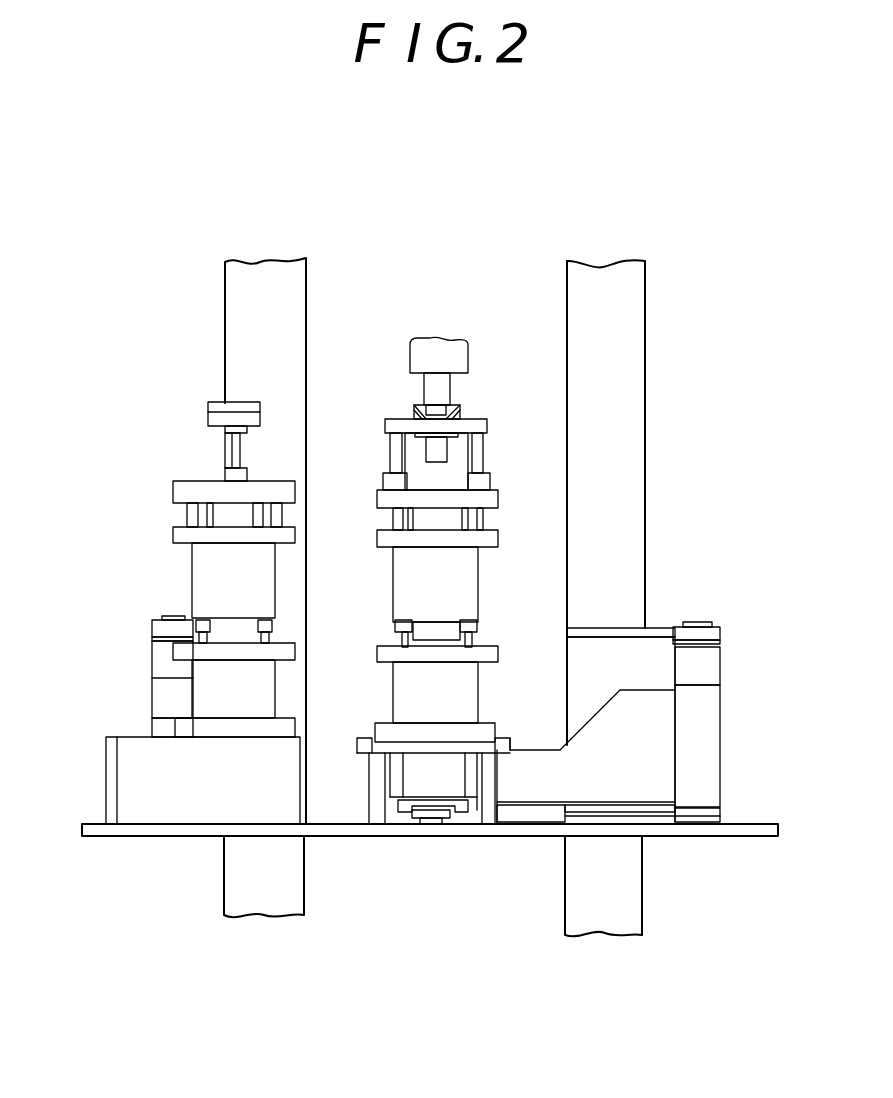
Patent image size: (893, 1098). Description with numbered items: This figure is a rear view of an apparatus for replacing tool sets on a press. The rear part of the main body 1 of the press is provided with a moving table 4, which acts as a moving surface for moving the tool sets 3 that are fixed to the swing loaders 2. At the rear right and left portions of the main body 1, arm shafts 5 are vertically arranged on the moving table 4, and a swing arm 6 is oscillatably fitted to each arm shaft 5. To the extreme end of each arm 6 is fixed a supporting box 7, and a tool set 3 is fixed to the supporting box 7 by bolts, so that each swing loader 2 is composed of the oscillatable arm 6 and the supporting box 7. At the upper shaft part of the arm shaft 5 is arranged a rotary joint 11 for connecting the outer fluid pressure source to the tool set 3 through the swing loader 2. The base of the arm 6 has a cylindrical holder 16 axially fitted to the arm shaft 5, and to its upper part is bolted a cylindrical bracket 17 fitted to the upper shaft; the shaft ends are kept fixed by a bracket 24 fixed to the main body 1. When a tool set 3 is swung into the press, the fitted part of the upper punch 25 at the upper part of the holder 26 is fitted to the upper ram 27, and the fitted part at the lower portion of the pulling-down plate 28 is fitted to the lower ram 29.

The main body 1 is at (225, 355).
The swing loader 2 is at (150, 732).
The tool set 3 is at (192, 567).
The moving table 4 is at (770, 823).
The arm shaft 5 is at (178, 615).
The swing arm 6 is at (640, 783).
The supporting box 7 is at (138, 772).
The rotary joint 11 is at (150, 658).
The cylindrical holder 16 is at (150, 695).
The cylindrical bracket 17 is at (720, 673).
The bracket 24 is at (620, 628).
The upper punch 25 is at (450, 452).
The holder 26 is at (403, 420).
The upper ram 27 is at (453, 392).
The pulling-down plate 28 is at (403, 805).
The lower ram 29 is at (435, 822).